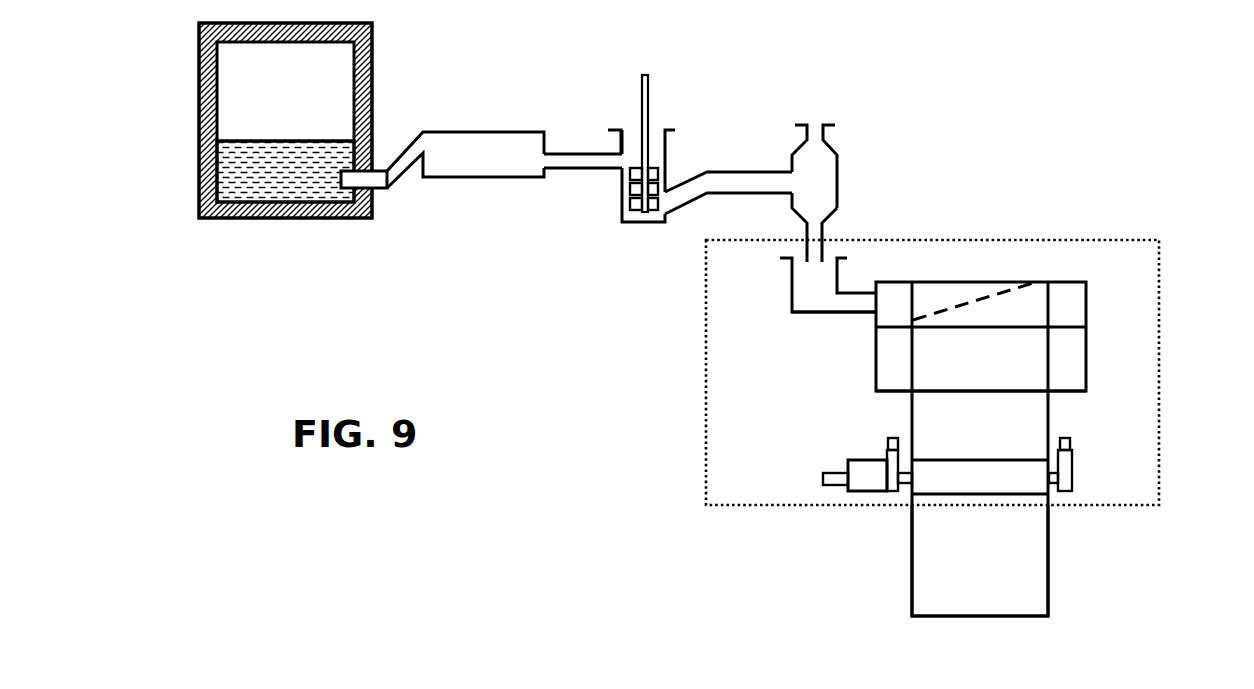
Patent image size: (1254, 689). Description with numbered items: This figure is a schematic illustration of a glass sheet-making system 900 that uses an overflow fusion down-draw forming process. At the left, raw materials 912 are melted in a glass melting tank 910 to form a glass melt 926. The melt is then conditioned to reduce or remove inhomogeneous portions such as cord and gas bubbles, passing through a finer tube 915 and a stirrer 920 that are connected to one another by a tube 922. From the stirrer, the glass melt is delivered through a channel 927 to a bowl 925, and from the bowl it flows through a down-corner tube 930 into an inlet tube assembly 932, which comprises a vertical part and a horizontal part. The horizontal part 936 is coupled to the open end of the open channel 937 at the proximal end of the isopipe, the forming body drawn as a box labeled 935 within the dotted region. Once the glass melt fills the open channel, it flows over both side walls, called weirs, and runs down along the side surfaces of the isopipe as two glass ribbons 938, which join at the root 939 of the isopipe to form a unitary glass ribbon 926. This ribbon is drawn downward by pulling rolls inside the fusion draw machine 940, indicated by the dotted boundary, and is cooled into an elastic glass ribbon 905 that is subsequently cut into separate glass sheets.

The glass sheet-making system 900 is at (990, 93).
The elastic glass ribbon 905 is at (908, 562).
The glass melting tank 910 is at (272, 229).
The raw materials 912 is at (196, 110).
The finer tube 915 is at (502, 128).
The stirrer 920 is at (670, 158).
The tube 922 is at (582, 177).
The bowl 925 is at (841, 168).
The glass melt 926 is at (287, 137).
The channel 927 is at (727, 199).
The down-corner tube 930 is at (826, 228).
The inlet tube assembly 932 is at (788, 303).
The deposition head 935 is at (1092, 313).
The horizontal part 936 is at (873, 318).
The open channel 937 is at (949, 292).
The glass ribbons 938 is at (938, 349).
The root 939 is at (1012, 393).
The fusion draw machine 940 is at (706, 384).